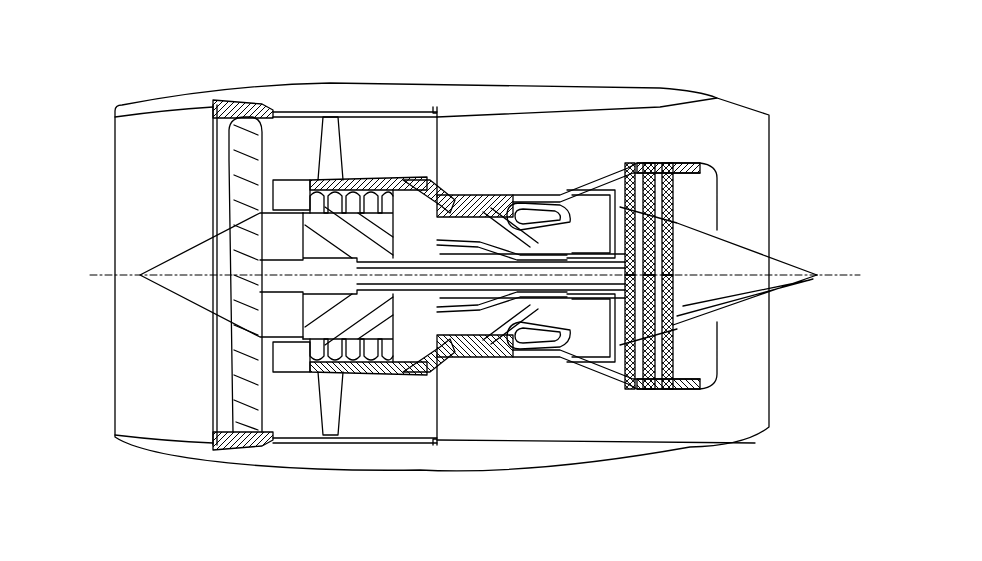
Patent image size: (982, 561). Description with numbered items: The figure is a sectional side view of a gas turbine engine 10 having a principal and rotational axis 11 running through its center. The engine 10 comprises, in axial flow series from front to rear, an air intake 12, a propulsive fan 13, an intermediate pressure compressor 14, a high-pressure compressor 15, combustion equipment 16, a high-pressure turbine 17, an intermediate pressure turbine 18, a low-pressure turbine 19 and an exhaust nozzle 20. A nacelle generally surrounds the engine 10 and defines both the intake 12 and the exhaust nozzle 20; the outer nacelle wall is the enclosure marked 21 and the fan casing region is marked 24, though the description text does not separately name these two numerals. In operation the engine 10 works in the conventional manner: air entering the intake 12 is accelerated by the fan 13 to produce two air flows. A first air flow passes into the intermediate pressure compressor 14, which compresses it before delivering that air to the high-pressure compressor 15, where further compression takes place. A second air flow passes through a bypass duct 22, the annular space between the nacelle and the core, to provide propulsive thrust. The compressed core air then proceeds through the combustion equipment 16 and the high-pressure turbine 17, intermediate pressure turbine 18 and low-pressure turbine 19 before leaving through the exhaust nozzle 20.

The gas turbine engine 10 is at (97, 139).
The principal and rotational axis 11 is at (132, 273).
The air intake 12 is at (190, 117).
The propulsive fan 13 is at (238, 400).
The intermediate pressure compressor 14 is at (368, 380).
The high-pressure compressor 15 is at (482, 196).
The combustion equipment 16 is at (500, 365).
The high-pressure turbine 17 is at (560, 368).
The intermediate pressure turbine 18 is at (600, 180).
The low-pressure turbine 19 is at (620, 382).
The exhaust nozzle 20 is at (770, 408).
The nacelle 21 is at (503, 100).
The bypass duct 22 is at (410, 157).
The fan casing 24 is at (289, 108).